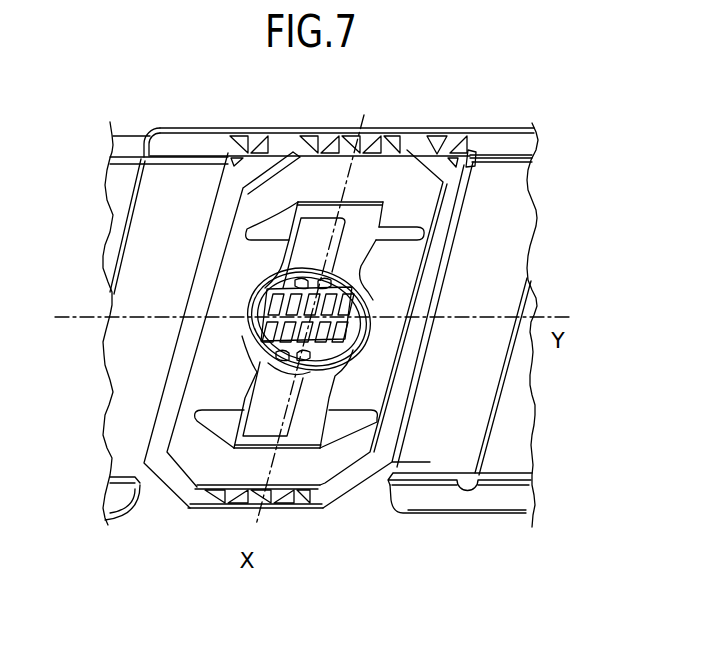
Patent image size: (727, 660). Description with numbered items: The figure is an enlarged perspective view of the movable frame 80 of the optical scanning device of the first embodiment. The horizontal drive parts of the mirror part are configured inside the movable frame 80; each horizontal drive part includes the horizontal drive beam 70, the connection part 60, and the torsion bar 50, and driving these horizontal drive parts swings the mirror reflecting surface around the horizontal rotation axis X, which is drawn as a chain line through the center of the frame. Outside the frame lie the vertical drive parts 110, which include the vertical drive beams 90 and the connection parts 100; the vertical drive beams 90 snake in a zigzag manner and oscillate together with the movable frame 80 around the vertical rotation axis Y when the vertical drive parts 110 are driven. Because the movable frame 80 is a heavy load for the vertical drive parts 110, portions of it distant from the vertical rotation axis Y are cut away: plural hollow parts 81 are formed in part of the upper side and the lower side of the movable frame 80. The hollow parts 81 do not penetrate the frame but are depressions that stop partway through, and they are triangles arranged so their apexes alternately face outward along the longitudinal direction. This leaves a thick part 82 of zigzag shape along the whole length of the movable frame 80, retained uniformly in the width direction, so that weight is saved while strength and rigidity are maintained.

The torsion bar 50 is at (344, 238).
The connection part 60 is at (312, 210).
The horizontal drive beam 70 is at (231, 397).
The movable frame 80 is at (395, 386).
The hollow parts 81 is at (272, 500).
The thick part 82 is at (229, 498).
The vertical drive beams 90 is at (427, 452).
The connection parts 100 is at (466, 498).
The vertical drive parts 110 is at (490, 589).